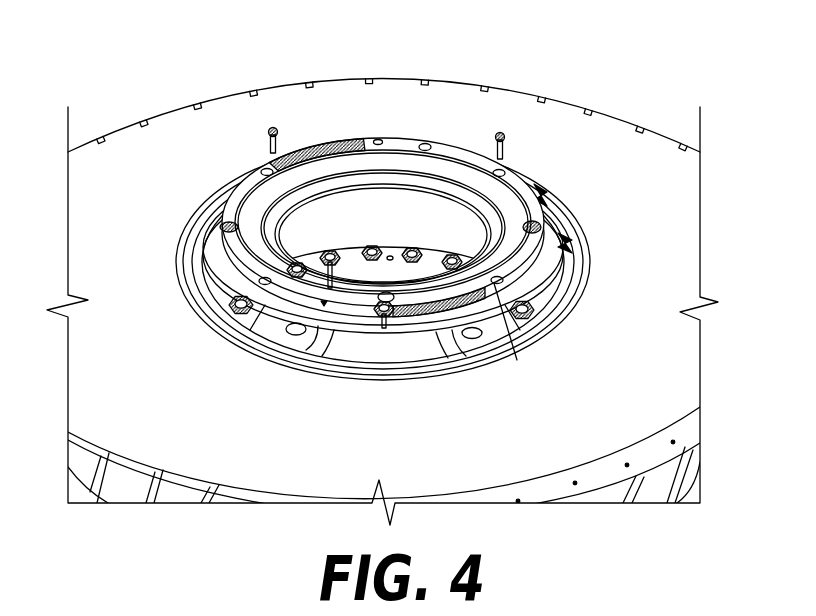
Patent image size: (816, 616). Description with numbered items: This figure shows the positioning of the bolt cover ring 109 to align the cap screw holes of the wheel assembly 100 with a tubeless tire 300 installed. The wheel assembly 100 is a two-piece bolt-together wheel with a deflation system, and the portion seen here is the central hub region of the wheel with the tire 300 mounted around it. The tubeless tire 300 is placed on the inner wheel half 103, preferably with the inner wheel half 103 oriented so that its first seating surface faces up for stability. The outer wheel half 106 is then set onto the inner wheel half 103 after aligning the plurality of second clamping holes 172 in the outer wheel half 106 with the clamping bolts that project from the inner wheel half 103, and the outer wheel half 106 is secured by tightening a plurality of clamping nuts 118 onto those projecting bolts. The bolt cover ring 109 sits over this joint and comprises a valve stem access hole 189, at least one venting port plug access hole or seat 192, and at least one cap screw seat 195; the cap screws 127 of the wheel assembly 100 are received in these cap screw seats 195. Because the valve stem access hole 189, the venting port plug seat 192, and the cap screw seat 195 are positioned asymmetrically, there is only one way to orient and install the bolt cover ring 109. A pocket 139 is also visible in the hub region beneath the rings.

The wheel assembly 100 is at (218, 159).
The inner wheel half 103 is at (522, 311).
The outer wheel half 106 is at (566, 232).
The bolt cover ring 109 is at (538, 190).
The clamping nuts 118 is at (416, 250).
The cap screws 127 is at (273, 127).
The pocket 139 is at (471, 337).
The second clamping holes 172 is at (390, 256).
The valve stem access hole 189 is at (380, 137).
The venting port plug access hole or seat 192 is at (293, 267).
The cap screw seat 195 is at (265, 168).
The tubeless tire 300 is at (357, 454).